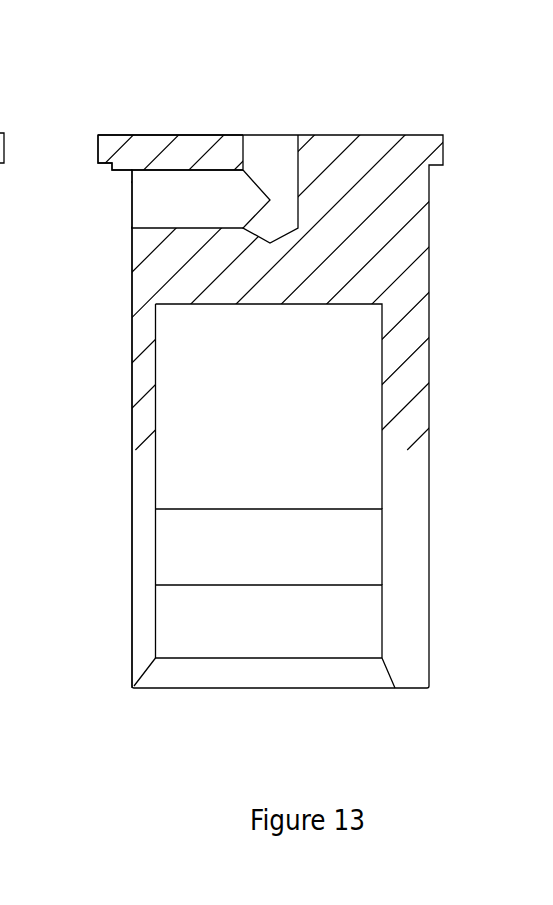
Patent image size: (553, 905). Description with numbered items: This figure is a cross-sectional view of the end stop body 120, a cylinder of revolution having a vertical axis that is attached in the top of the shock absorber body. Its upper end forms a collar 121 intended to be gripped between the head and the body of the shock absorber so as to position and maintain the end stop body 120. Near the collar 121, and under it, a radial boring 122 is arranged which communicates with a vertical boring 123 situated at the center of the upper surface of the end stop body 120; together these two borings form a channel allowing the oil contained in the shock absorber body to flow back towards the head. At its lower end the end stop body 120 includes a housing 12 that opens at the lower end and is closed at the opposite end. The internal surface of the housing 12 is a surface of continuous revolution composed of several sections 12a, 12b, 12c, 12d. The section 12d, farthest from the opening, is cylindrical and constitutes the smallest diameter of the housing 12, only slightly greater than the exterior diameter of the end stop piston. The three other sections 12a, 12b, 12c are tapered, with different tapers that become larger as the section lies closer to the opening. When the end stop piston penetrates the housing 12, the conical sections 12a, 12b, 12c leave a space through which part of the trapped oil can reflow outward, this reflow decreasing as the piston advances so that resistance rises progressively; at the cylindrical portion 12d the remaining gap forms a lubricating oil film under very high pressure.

The housing 12 is at (282, 397).
The tapered section 12a is at (395, 677).
The tapered section 12b is at (383, 610).
The tapered section 12c is at (382, 543).
The cylindrical section 12d is at (382, 443).
The end stop body 120 is at (66, 464).
The collar 121 is at (121, 103).
The radial boring 122 is at (163, 200).
The vertical boring 123 is at (270, 163).